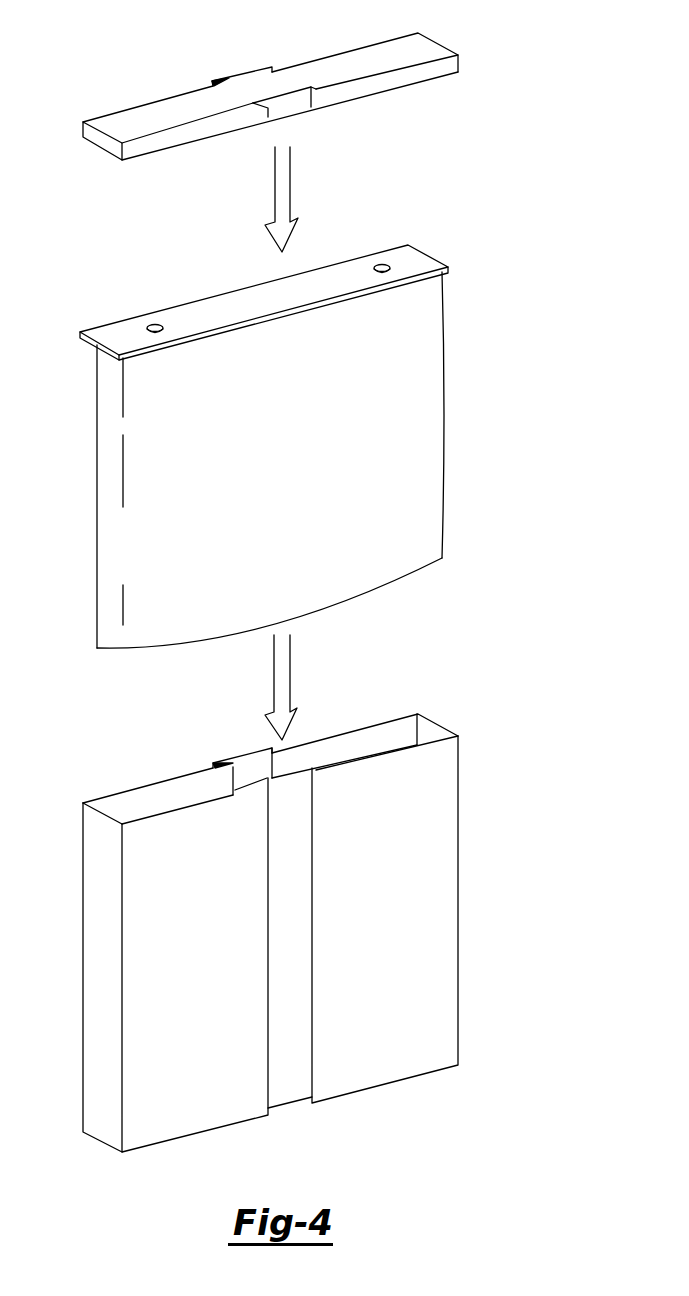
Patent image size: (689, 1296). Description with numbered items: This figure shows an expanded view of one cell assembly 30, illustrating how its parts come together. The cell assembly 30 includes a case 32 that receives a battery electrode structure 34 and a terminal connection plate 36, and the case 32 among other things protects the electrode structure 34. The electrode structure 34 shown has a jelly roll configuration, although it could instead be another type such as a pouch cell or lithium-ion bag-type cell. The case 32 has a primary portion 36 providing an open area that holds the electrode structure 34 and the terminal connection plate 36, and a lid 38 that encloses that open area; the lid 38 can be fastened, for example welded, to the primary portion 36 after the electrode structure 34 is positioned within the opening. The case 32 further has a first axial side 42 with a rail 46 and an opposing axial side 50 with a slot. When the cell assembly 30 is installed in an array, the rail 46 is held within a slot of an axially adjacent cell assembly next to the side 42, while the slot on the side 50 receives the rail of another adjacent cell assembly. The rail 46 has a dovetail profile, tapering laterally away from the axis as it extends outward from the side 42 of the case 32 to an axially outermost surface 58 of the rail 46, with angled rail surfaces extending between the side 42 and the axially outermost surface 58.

The cell assembly 30 is at (527, 74).
The case 32 is at (435, 1042).
The battery electrode structure 34 is at (420, 518).
The terminal connection plate 36 is at (420, 266).
The lid 38 is at (100, 143).
The first axial side 42 is at (137, 787).
The rail 46 is at (257, 72).
The opposing axial side 50 is at (180, 1112).
The axially outermost surface 58 is at (242, 72).